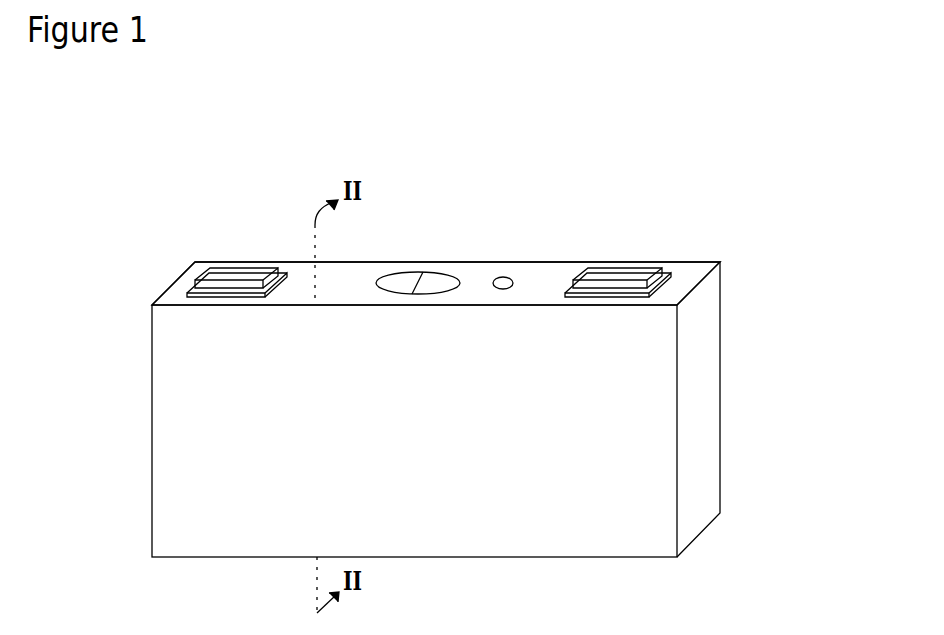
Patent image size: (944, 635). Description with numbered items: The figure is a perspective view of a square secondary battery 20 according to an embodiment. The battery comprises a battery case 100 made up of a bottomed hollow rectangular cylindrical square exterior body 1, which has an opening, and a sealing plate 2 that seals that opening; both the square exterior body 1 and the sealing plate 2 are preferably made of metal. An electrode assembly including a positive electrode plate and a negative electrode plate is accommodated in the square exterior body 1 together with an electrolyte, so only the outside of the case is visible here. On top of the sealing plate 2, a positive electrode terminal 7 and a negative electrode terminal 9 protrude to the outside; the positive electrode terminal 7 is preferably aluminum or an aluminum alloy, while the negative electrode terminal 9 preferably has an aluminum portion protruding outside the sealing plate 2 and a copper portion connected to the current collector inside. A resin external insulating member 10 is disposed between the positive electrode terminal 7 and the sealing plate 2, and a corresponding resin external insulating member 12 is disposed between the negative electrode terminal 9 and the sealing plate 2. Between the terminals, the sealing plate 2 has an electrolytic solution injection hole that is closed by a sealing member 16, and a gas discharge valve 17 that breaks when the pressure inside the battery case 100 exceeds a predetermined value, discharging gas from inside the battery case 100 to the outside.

The battery case 100 is at (801, 174).
The square secondary battery 20 is at (181, 131).
The square exterior body 1 is at (713, 340).
The sealing plate 2 is at (685, 272).
The positive electrode terminal 7 is at (632, 272).
The negative electrode terminal 9 is at (246, 276).
The external insulating member 10 is at (573, 283).
The external insulating member 12 is at (205, 280).
The sealing member 16 is at (507, 280).
The gas discharge valve 17 is at (433, 278).